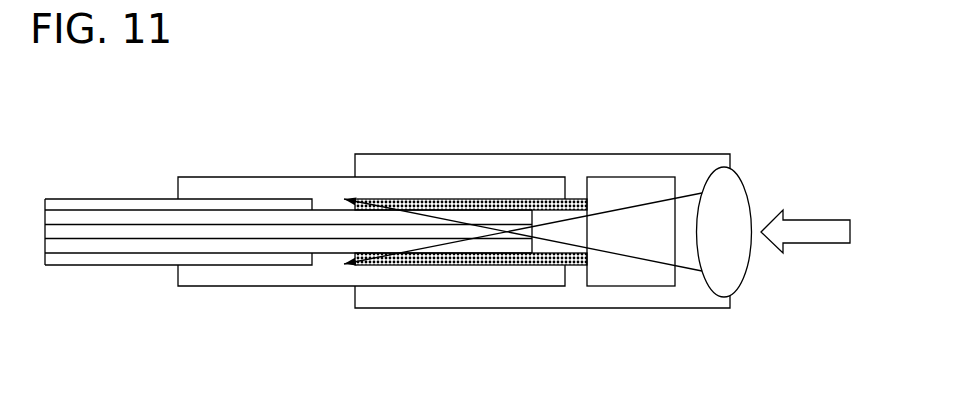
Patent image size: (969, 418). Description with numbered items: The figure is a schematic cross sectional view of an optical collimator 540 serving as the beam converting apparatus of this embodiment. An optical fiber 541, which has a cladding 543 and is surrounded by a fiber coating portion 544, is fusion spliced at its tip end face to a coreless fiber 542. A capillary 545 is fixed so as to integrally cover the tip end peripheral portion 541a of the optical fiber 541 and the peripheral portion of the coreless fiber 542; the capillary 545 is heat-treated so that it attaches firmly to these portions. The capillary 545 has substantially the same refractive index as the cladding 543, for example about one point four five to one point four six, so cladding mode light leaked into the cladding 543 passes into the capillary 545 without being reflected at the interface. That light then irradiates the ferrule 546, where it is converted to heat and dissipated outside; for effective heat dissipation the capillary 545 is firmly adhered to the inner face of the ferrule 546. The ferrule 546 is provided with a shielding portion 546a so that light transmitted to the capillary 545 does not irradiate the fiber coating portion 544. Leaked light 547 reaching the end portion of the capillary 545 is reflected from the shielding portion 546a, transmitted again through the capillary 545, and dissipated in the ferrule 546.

The optical collimator 540 is at (460, 148).
The optical fiber 541 is at (128, 192).
The tip end peripheral portion 541a is at (490, 253).
The coreless fiber 542 is at (550, 217).
The cladding 543 is at (344, 196).
The fiber coating portion 544 is at (197, 198).
The capillary 545 is at (467, 265).
The ferrule 546 is at (258, 275).
The shielding portion 546a is at (330, 262).
The leaked light 547 is at (344, 268).